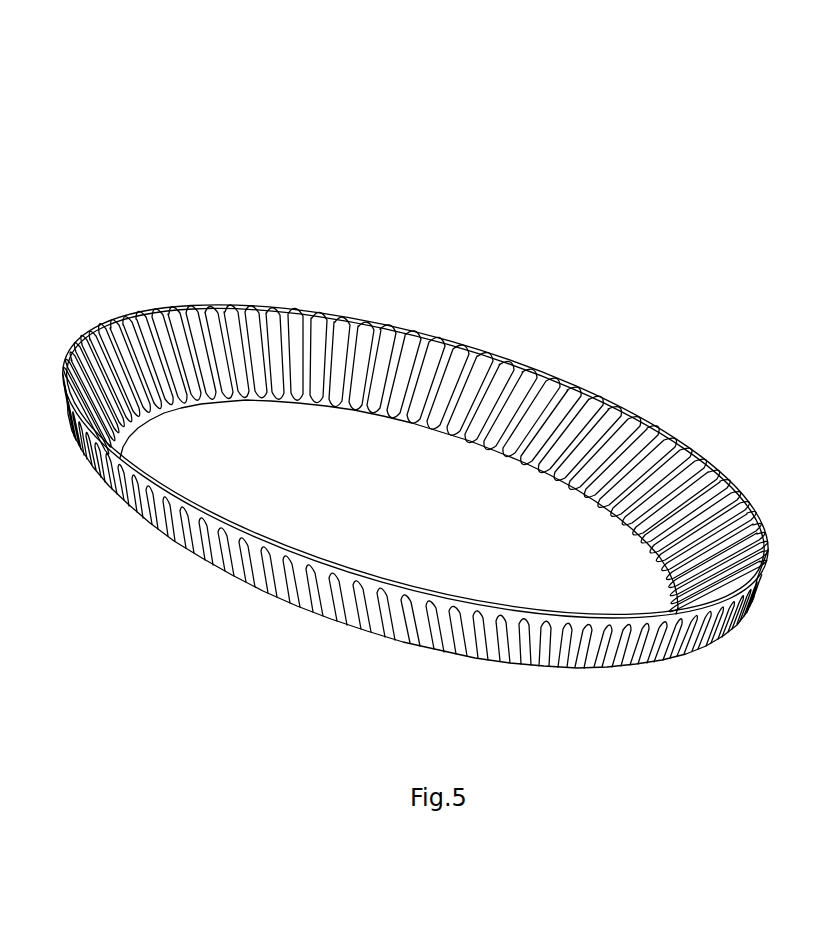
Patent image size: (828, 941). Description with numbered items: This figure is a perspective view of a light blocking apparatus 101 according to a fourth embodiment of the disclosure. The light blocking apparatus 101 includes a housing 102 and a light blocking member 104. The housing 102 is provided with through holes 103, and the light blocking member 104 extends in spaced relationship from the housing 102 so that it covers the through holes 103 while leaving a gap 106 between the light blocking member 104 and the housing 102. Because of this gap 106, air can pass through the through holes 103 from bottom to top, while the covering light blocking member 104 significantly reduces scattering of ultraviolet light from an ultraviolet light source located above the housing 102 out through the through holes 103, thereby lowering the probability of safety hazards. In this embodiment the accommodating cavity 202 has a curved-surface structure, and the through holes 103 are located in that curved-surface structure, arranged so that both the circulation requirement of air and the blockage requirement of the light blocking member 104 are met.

The light blocking apparatus 101 is at (713, 78).
The housing 102 is at (600, 592).
The through hole 103 is at (463, 628).
The light blocking member 104 is at (340, 318).
The gap 106 is at (468, 620).
The accommodating cavity 202 is at (527, 498).